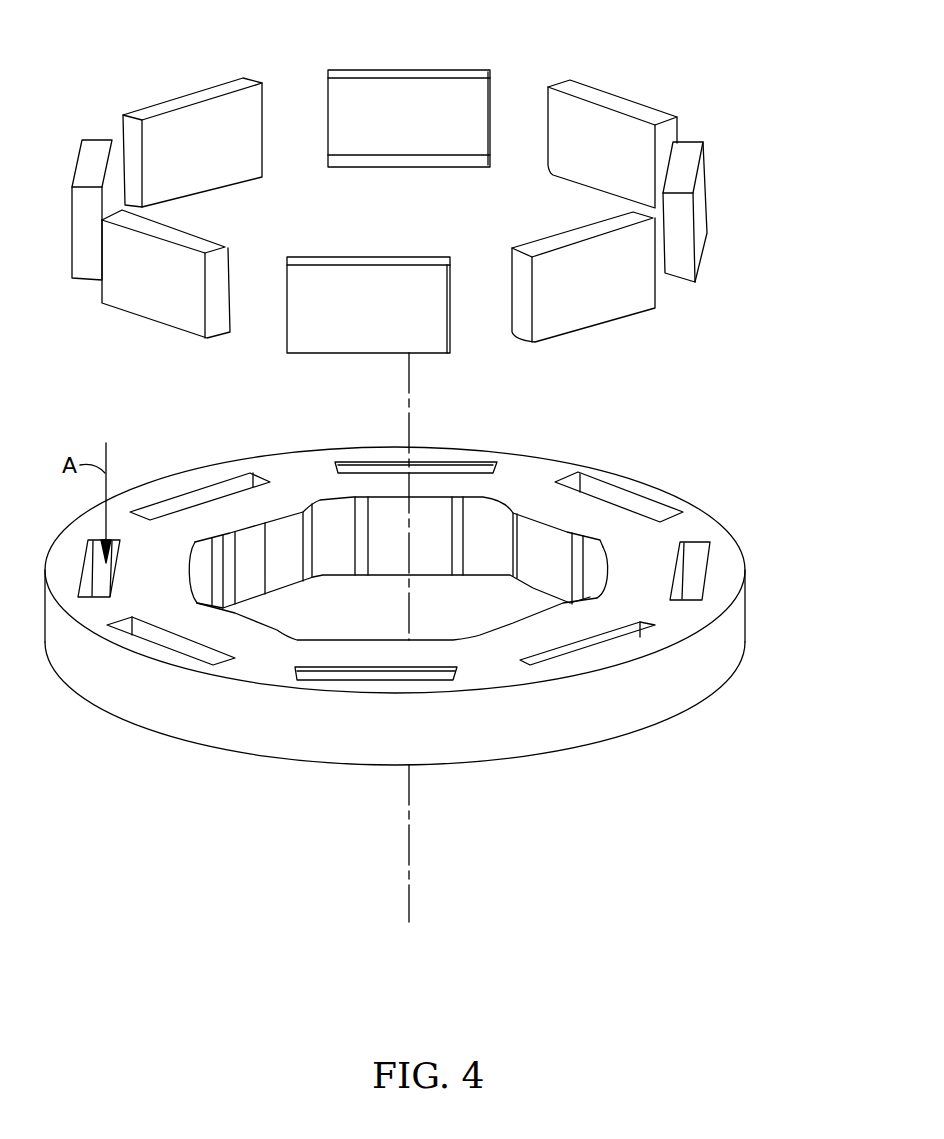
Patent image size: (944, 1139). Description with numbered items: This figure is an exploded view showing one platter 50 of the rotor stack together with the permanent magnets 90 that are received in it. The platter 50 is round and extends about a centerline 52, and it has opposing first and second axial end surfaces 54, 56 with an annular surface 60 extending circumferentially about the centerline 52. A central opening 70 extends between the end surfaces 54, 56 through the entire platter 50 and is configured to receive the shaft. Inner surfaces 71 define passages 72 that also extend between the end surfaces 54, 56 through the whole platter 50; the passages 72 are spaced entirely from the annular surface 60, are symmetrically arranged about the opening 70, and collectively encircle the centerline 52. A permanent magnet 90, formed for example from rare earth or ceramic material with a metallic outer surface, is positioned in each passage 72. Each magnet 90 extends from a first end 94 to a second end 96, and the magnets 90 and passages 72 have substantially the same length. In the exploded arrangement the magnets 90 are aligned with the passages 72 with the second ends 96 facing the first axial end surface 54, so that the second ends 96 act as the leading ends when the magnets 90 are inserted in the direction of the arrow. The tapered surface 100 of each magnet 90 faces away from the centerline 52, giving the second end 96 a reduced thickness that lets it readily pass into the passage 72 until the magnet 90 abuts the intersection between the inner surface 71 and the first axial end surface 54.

The platter 50 is at (448, 580).
The centerline 52 is at (410, 855).
The first axial end surface 54 is at (685, 522).
The second axial end surface 56 is at (708, 693).
The annular surface 60 is at (730, 633).
The opening 70 is at (480, 536).
The inner surface 71 is at (735, 550).
The passage 72 is at (714, 569).
The permanent magnet 90 is at (417, 97).
The first end 94 is at (220, 222).
The second end 96 is at (194, 368).
The tapered surface 100 is at (408, 160).